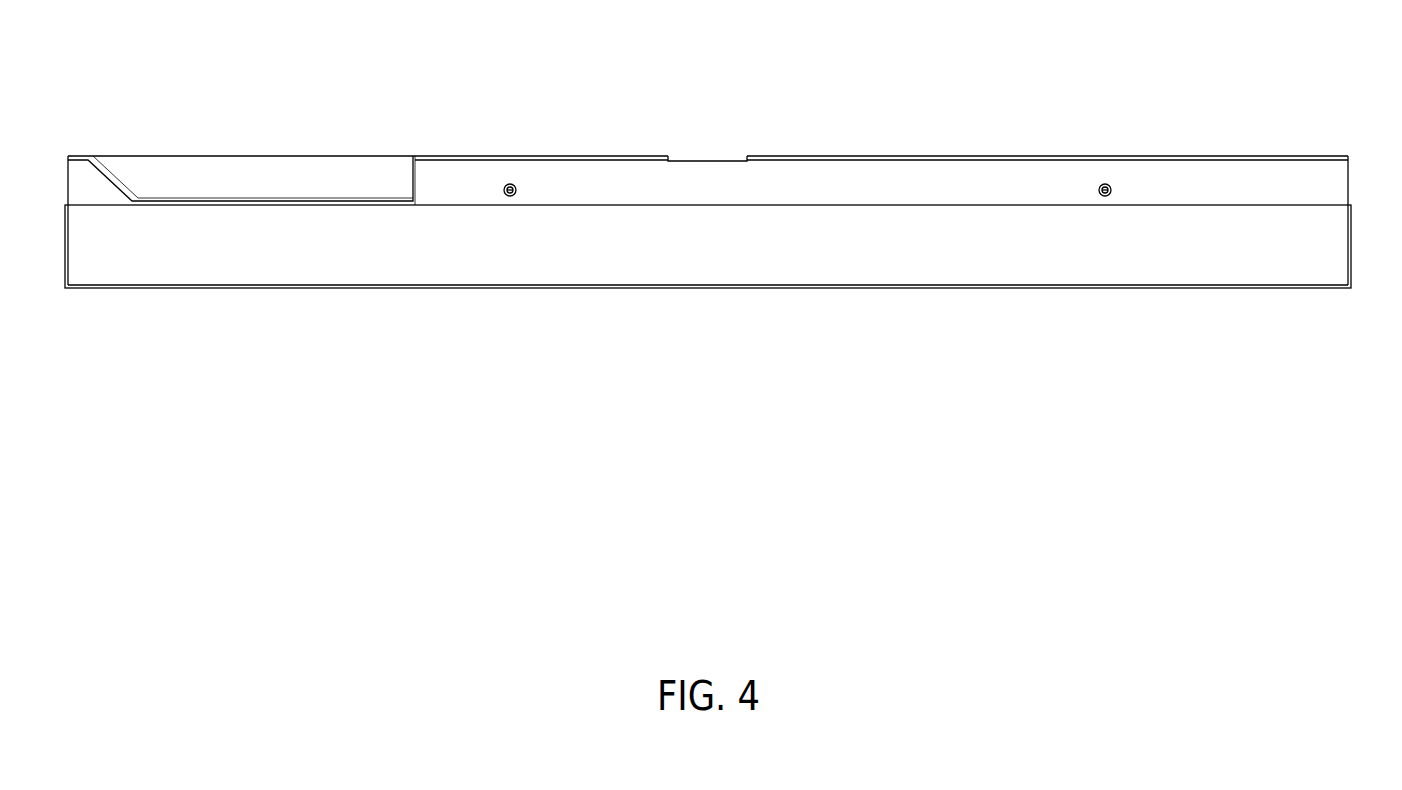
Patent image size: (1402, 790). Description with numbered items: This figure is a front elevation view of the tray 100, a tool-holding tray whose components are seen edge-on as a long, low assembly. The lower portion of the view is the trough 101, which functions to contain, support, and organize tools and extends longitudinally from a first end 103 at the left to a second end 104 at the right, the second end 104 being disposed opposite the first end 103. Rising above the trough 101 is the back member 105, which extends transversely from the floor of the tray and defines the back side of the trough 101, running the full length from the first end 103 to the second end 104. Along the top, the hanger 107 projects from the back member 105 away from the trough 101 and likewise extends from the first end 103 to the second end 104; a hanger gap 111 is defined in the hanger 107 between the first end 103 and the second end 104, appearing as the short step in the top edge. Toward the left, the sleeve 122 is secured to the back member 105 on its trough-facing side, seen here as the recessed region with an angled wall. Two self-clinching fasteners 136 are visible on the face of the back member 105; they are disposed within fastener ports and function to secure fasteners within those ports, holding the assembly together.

The tray 100 is at (459, 100).
The trough 101 is at (363, 267).
The first end 103 is at (63, 247).
The second end 104 is at (1351, 250).
The back member 105 is at (617, 170).
The hanger 107 is at (812, 152).
The hanger gap 111 is at (672, 158).
The sleeve 122 is at (278, 175).
The self-clinching fasteners 136 is at (514, 185).